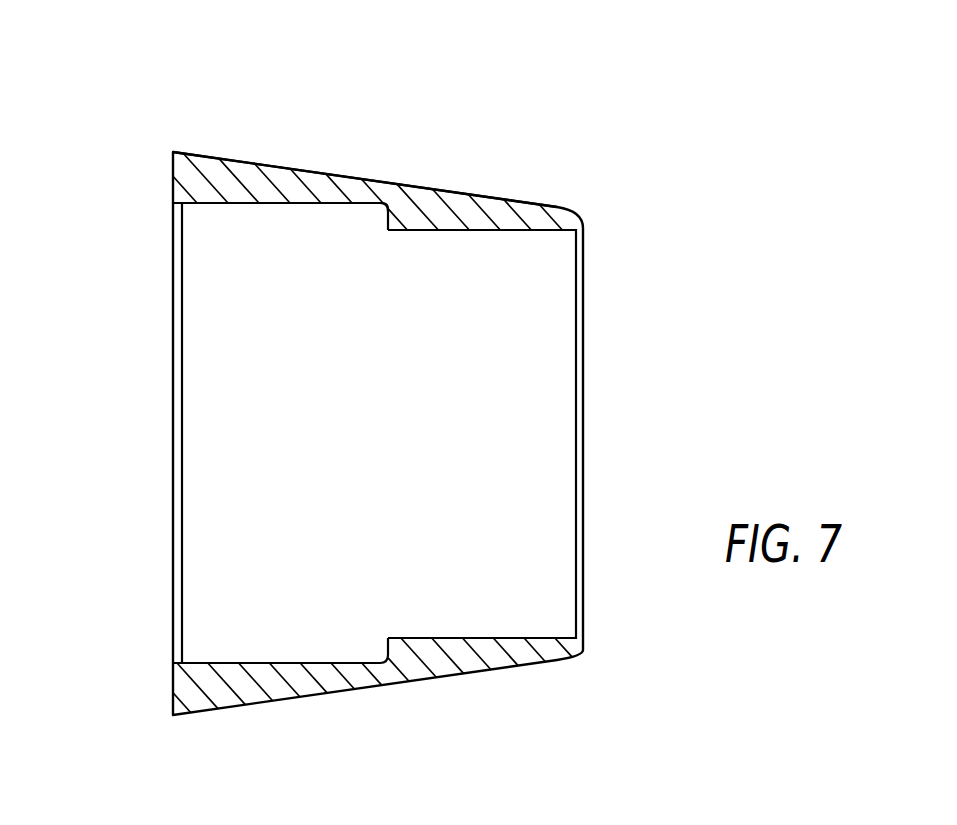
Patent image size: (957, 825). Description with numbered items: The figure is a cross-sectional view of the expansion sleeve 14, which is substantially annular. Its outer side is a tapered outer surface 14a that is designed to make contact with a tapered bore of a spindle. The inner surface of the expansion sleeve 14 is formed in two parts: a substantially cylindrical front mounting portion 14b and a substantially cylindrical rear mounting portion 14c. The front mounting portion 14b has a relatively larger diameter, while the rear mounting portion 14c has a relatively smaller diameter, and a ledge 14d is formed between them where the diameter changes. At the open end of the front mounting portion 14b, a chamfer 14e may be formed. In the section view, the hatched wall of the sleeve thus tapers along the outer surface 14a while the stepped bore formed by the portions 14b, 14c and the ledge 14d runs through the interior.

The expansion sleeve 14 is at (362, 385).
The tapered outer surface 14a is at (272, 163).
The front mounting portion 14b is at (253, 205).
The rear mounting portion 14c is at (487, 230).
The ledge 14d is at (388, 212).
The chamfer 14e is at (173, 213).